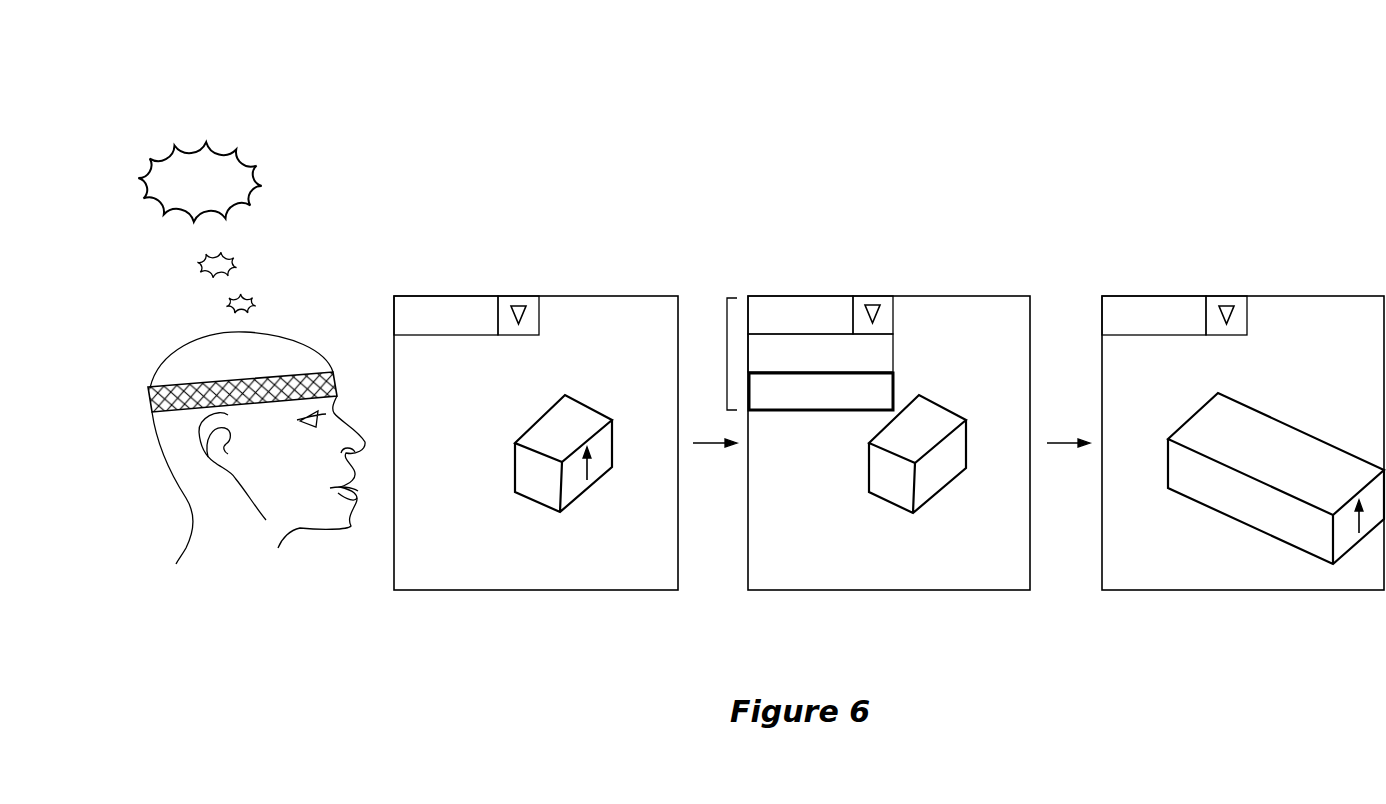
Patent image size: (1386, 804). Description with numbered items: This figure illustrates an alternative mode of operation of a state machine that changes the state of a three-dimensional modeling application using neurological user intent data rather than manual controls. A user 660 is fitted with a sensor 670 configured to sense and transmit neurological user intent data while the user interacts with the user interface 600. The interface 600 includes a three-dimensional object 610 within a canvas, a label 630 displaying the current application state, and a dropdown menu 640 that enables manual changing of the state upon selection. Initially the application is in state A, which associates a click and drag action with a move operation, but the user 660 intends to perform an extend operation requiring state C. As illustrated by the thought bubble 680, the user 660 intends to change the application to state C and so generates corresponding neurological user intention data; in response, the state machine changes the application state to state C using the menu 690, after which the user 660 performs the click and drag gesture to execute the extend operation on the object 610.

The user interface 600 is at (614, 297).
The 3D object 610 is at (521, 473).
The label 630 is at (450, 296).
The dropdown menu 640 is at (518, 296).
The user 660 is at (195, 513).
The sensor 670 is at (338, 380).
The thought bubble 680 is at (258, 149).
The menu 690 is at (727, 353).